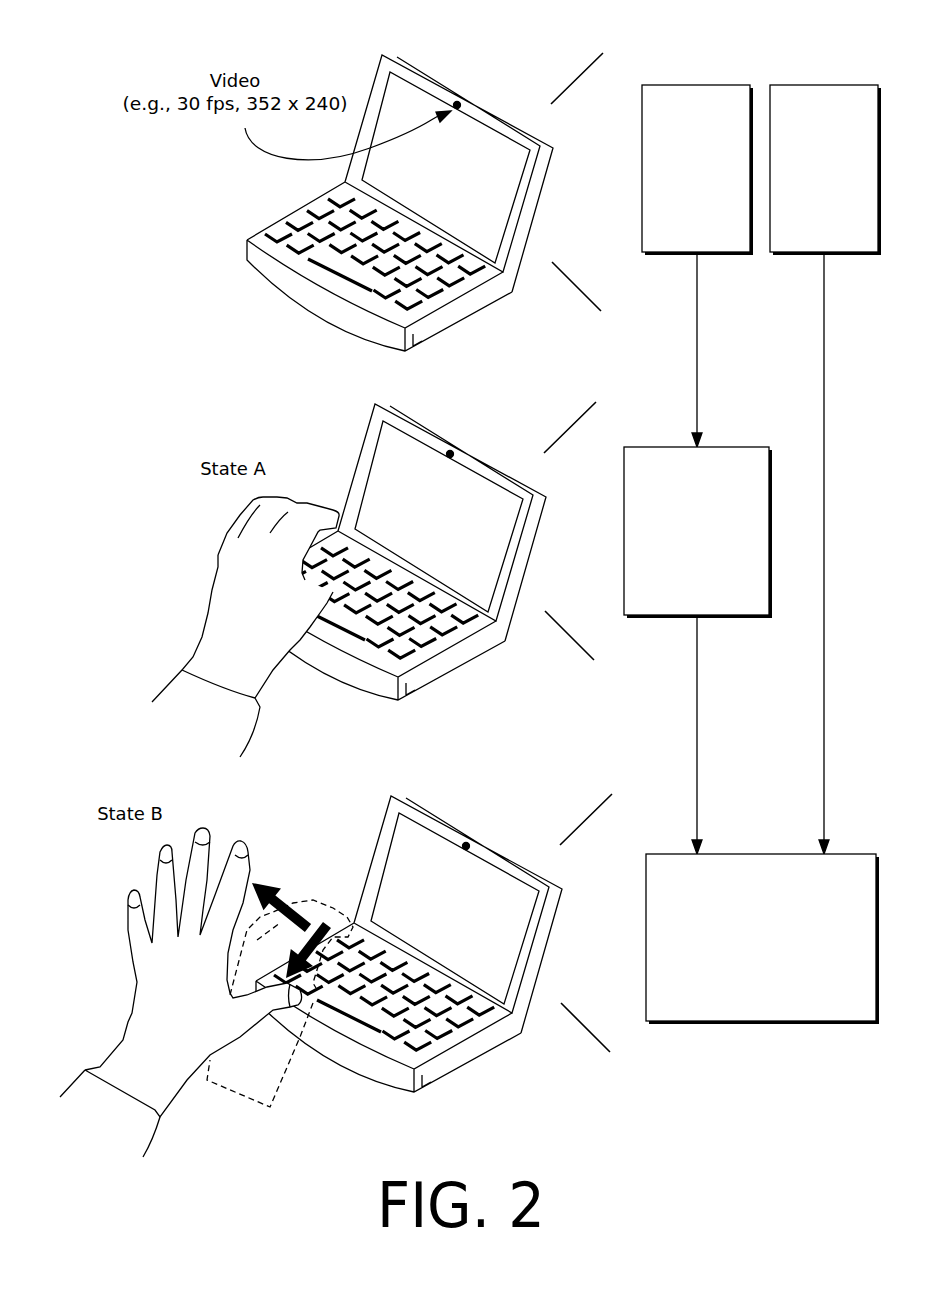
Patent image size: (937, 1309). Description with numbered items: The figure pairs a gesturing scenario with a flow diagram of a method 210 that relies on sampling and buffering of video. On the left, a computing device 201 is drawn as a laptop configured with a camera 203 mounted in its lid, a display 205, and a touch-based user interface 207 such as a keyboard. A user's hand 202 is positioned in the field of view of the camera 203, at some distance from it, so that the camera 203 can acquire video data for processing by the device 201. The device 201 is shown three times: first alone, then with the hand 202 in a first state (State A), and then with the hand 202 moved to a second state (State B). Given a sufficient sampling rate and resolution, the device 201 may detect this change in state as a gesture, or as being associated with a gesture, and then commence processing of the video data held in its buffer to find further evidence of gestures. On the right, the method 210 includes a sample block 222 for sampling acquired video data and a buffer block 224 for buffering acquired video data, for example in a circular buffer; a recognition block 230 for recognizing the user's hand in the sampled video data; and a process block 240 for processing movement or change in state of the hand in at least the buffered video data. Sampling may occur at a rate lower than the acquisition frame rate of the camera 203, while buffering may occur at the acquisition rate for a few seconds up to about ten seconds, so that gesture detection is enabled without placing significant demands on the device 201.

The computing device 201 is at (426, 568).
The user's hand 202 is at (226, 598).
The camera 203 is at (493, 454).
The display 205 is at (477, 538).
The touch-based user interface 207 is at (391, 644).
The method 210 is at (760, 434).
The sample block 222 is at (697, 170).
The buffer block 224 is at (825, 170).
The recognition block 230 is at (698, 532).
The process block 240 is at (762, 939).